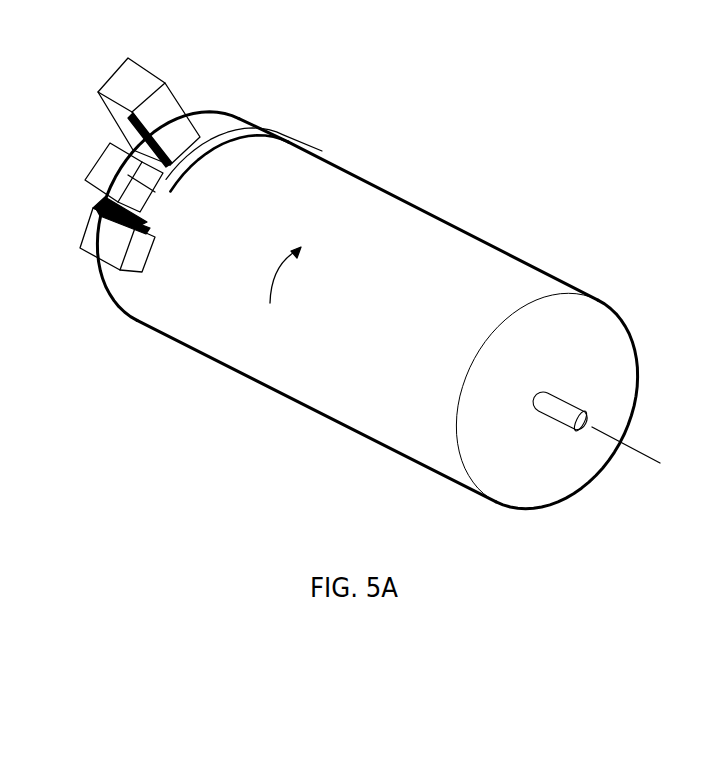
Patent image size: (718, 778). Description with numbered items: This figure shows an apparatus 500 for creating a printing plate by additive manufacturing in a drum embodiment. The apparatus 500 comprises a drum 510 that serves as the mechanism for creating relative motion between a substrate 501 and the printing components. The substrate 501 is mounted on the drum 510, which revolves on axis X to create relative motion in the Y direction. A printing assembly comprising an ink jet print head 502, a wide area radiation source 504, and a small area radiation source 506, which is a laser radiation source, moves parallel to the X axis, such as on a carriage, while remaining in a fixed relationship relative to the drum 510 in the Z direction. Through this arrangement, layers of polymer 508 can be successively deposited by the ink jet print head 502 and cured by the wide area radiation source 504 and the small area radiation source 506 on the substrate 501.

The apparatus 500 is at (208, 418).
The substrate 501 is at (391, 327).
The ink jet print head 502 is at (128, 270).
The wide area radiation source 504 is at (155, 183).
The small area radiation source 506 is at (173, 125).
The layers of polymer 508 is at (238, 125).
The drum 510 is at (592, 387).